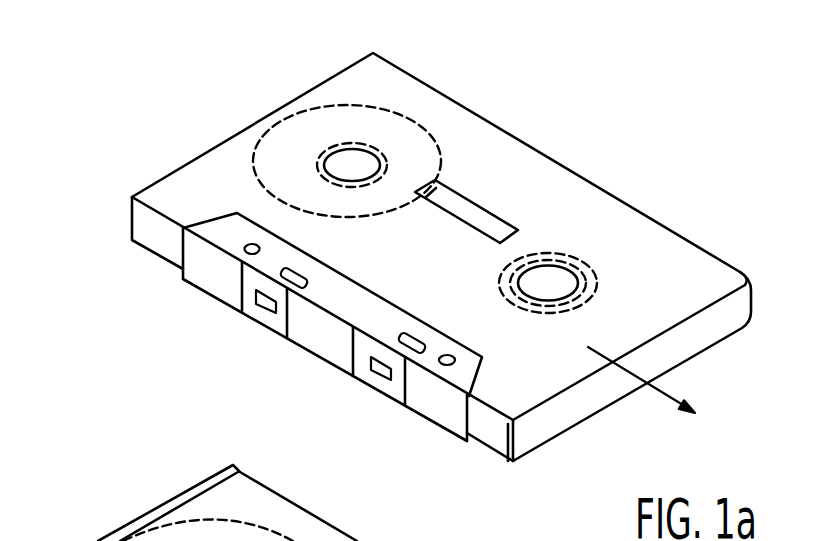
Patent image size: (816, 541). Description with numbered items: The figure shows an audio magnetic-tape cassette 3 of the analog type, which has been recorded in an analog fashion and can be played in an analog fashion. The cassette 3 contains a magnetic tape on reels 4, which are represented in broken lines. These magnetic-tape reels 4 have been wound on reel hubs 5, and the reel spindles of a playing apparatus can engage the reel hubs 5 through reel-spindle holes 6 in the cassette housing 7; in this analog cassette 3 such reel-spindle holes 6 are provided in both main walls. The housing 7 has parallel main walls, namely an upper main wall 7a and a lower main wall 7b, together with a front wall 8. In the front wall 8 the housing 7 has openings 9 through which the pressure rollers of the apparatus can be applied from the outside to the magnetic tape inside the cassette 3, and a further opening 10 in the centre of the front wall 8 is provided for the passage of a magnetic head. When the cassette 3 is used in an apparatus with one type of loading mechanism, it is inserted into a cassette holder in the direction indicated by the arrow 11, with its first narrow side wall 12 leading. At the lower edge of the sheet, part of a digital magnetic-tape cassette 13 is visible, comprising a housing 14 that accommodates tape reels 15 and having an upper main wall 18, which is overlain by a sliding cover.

In FIG. 1a, the magnetic-tape cassette 3 is at (525, 108).
In FIG. 1a, the reels 4 is at (360, 108).
In FIG. 1a, the reel hubs 5 is at (597, 284).
In FIG. 1a, the reel-spindle holes 6 is at (564, 283).
In FIG. 1a, the cassette housing 7 is at (533, 167).
In FIG. 1a, the upper main wall 7a is at (552, 388).
In FIG. 1a, the lower main wall 7b is at (547, 447).
In FIG. 1a, the front wall 8 is at (163, 235).
In FIG. 1a, the openings 9 is at (211, 268).
In FIG. 1a, the further opening 10 is at (327, 335).
In FIG. 1a, the arrow 11 is at (648, 383).
In FIG. 1a, the first narrow side wall 12 is at (700, 332).
In FIG. 1b, the digital magnetic-tape cassette 13 is at (448, 521).
In FIG. 1b, the housing 14 is at (353, 533).
In FIG. 1b, the tape reels 15 is at (247, 520).
In FIG. 1b, the upper main wall 18 is at (97, 540).